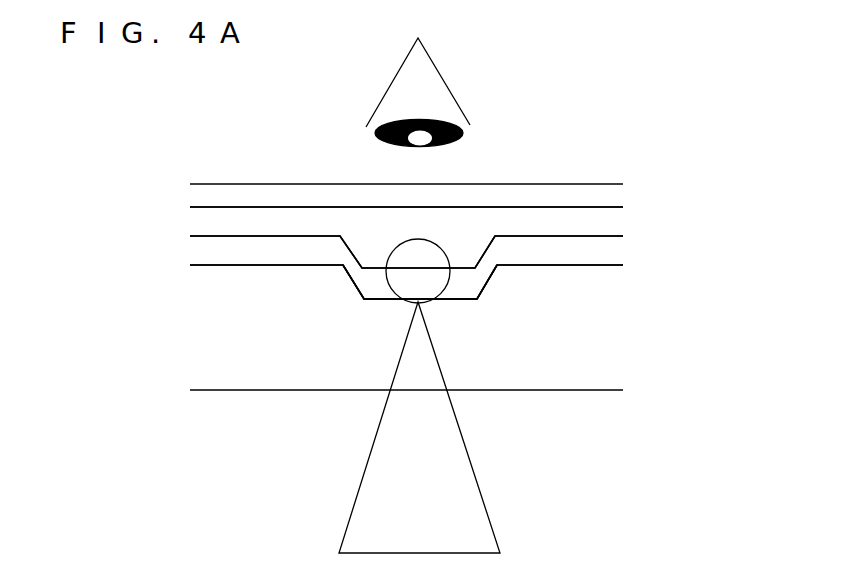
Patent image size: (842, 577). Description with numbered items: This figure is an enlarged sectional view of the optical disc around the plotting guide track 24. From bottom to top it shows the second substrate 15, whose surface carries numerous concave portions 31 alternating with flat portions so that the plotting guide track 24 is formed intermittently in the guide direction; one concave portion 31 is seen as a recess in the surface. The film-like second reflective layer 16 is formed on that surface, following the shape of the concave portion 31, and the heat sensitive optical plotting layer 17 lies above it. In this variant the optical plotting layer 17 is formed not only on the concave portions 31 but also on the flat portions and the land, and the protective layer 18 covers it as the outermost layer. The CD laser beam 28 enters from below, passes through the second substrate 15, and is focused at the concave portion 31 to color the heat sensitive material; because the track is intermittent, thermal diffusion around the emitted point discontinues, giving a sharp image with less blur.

The protective layer 18 is at (597, 195).
The optical plotting layer 17 is at (607, 220).
The second reflective layer 16 is at (602, 248).
The second substrate 15 is at (585, 344).
The concave portion 31 is at (370, 291).
The plotting guide track 24 is at (365, 302).
The CD laser beam 28 is at (482, 488).